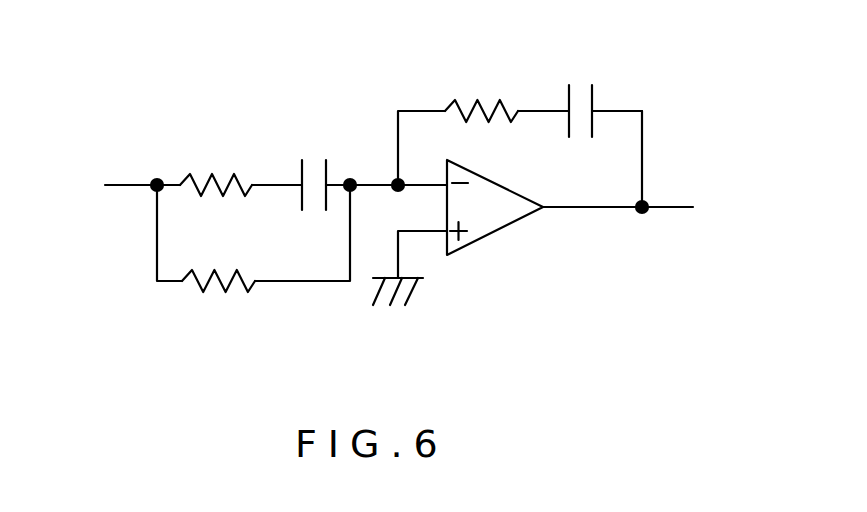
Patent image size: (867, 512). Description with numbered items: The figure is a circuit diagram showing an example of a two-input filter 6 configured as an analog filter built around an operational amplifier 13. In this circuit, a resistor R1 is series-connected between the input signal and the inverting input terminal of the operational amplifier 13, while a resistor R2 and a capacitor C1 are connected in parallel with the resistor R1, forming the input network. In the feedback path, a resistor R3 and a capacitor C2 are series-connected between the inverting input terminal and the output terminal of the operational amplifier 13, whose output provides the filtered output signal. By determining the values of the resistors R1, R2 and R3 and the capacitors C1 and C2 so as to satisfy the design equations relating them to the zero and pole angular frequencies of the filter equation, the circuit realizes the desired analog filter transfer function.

The two-input filter 6 is at (405, 220).
The operational amplifier 13 is at (505, 227).
The resistor R1 is at (218, 261).
The resistor R2 is at (216, 165).
The resistor R3 is at (481, 90).
The capacitor C1 is at (301, 166).
The capacitor C2 is at (580, 92).